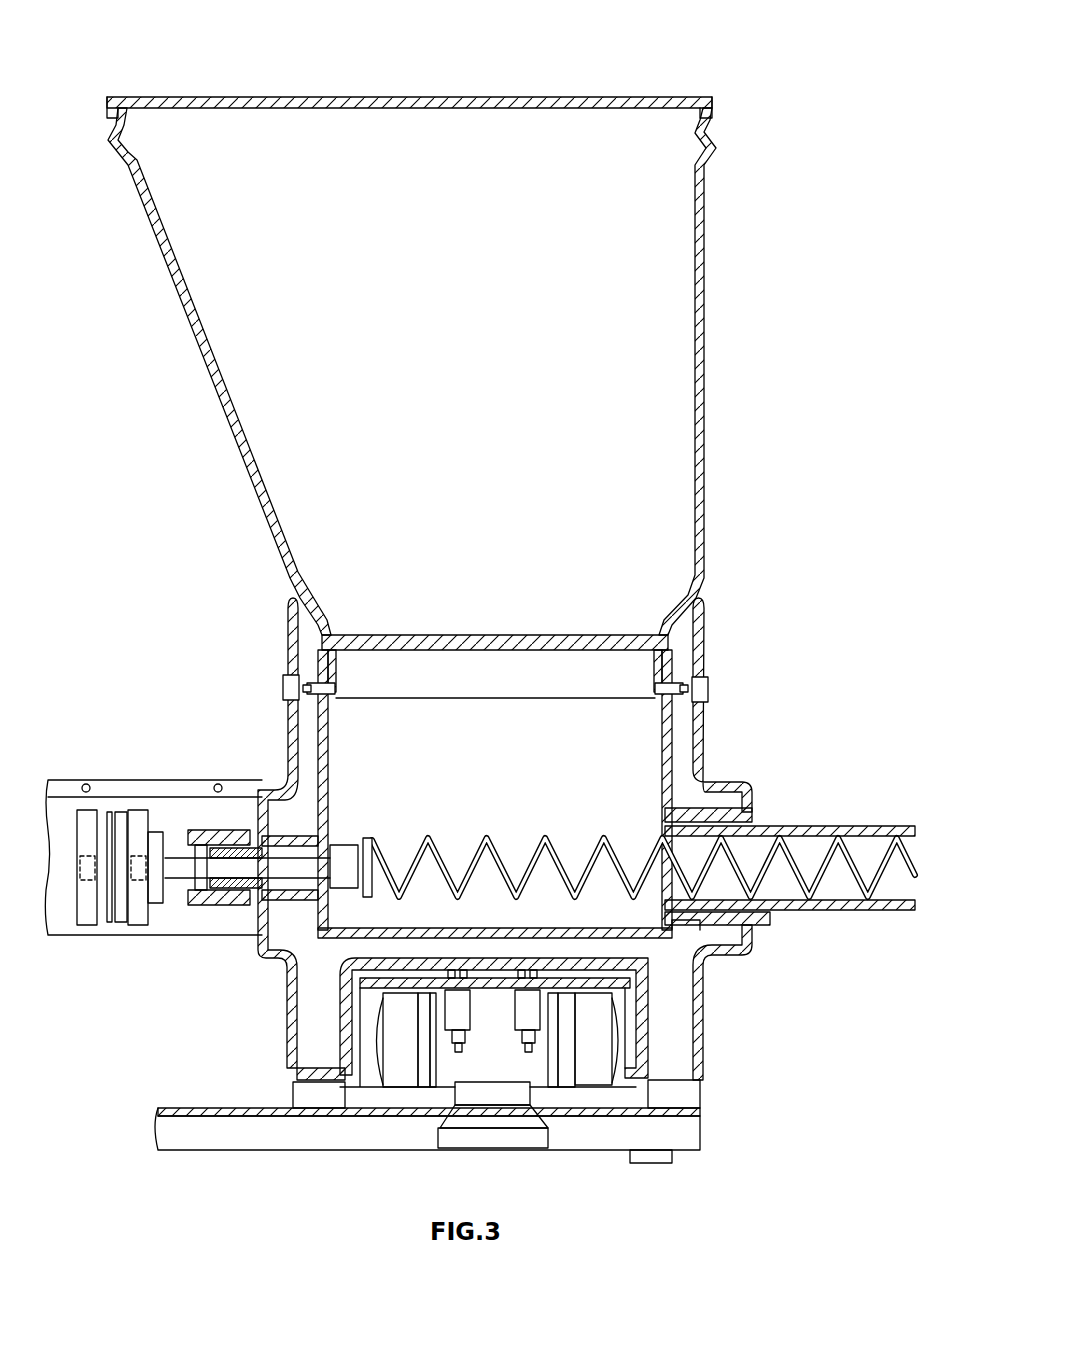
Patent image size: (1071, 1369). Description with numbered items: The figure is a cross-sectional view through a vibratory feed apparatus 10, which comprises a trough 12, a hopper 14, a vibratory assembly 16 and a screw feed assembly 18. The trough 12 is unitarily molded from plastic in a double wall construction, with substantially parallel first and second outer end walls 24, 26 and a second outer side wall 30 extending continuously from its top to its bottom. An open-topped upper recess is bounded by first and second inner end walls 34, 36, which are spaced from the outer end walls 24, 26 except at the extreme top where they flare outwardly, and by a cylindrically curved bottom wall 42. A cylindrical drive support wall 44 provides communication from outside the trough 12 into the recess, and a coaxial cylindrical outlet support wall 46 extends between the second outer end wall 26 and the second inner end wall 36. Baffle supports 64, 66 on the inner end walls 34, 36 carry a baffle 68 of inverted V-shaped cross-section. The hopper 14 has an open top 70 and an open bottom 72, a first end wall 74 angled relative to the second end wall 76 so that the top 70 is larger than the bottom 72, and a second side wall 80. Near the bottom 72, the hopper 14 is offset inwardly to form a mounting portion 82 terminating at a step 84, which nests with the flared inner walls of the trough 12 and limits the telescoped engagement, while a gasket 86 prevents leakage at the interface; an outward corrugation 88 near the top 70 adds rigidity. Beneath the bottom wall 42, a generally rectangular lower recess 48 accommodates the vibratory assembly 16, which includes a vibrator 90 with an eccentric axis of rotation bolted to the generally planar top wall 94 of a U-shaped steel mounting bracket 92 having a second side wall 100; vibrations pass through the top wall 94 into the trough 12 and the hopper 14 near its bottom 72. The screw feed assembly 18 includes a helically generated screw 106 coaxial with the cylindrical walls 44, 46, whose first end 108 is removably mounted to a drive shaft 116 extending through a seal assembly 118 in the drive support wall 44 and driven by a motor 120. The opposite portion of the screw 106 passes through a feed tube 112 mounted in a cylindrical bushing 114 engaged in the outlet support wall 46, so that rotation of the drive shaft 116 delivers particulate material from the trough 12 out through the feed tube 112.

The vibratory feed apparatus 10 is at (772, 312).
The trough 12 is at (523, 828).
The hopper 14 is at (447, 351).
The vibratory assembly 16 is at (464, 1115).
The screw feed assembly 18 is at (179, 881).
The first outer end wall 24 is at (290, 716).
The second outer end wall 26 is at (704, 750).
The second outer side wall 30 is at (655, 704).
The first inner end wall 34 is at (330, 734).
The second inner end wall 36 is at (660, 744).
The bottom wall 42 is at (505, 930).
The cylindrical drive support wall 44 is at (298, 832).
The cylindrical outlet support wall 46 is at (752, 796).
The lower recess 48 is at (358, 1075).
The baffle support 64 is at (336, 660).
The baffle support 66 is at (655, 660).
The baffle 68 is at (455, 698).
The open top 70 is at (704, 100).
The open bottom 72 is at (660, 628).
The first end wall 74 is at (168, 272).
The second end wall 76 is at (705, 272).
The second side wall 80 is at (700, 385).
The mounting portion 82 is at (312, 622).
The step 84 is at (290, 594).
The gasket 86 is at (300, 618).
The outward corrugation 88 is at (712, 148).
The vibrator 90 is at (540, 1100).
The mounting bracket 92 is at (706, 1075).
The top wall 94 is at (617, 950).
The second side wall 100 is at (552, 1073).
The screw 106 is at (490, 840).
The first end 108 is at (370, 840).
The feed tube 112 is at (850, 826).
The cylindrical bushing 114 is at (760, 922).
The drive shaft 116 is at (345, 845).
The seal assembly 118 is at (225, 906).
The motor 120 is at (85, 918).